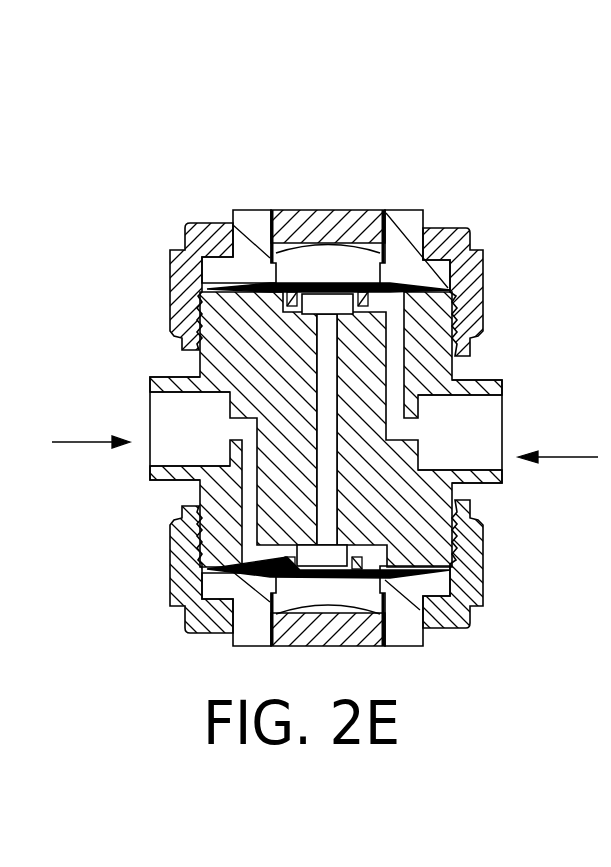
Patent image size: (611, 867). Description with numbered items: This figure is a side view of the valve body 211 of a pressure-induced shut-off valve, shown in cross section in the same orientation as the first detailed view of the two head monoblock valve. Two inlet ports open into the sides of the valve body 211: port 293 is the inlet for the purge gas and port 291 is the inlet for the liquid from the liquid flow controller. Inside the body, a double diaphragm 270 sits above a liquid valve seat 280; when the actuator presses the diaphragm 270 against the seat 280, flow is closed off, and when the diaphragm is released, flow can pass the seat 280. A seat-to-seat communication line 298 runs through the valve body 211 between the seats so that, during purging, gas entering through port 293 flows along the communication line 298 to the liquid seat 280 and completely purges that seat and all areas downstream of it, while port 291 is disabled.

The valve body 211 is at (350, 98).
The double diaphragm 270 is at (290, 300).
The liquid valve seat 280 is at (291, 306).
The inlet port 291 is at (505, 413).
The inlet port 293 is at (148, 452).
The seat-to-seat communication line 298 is at (322, 497).